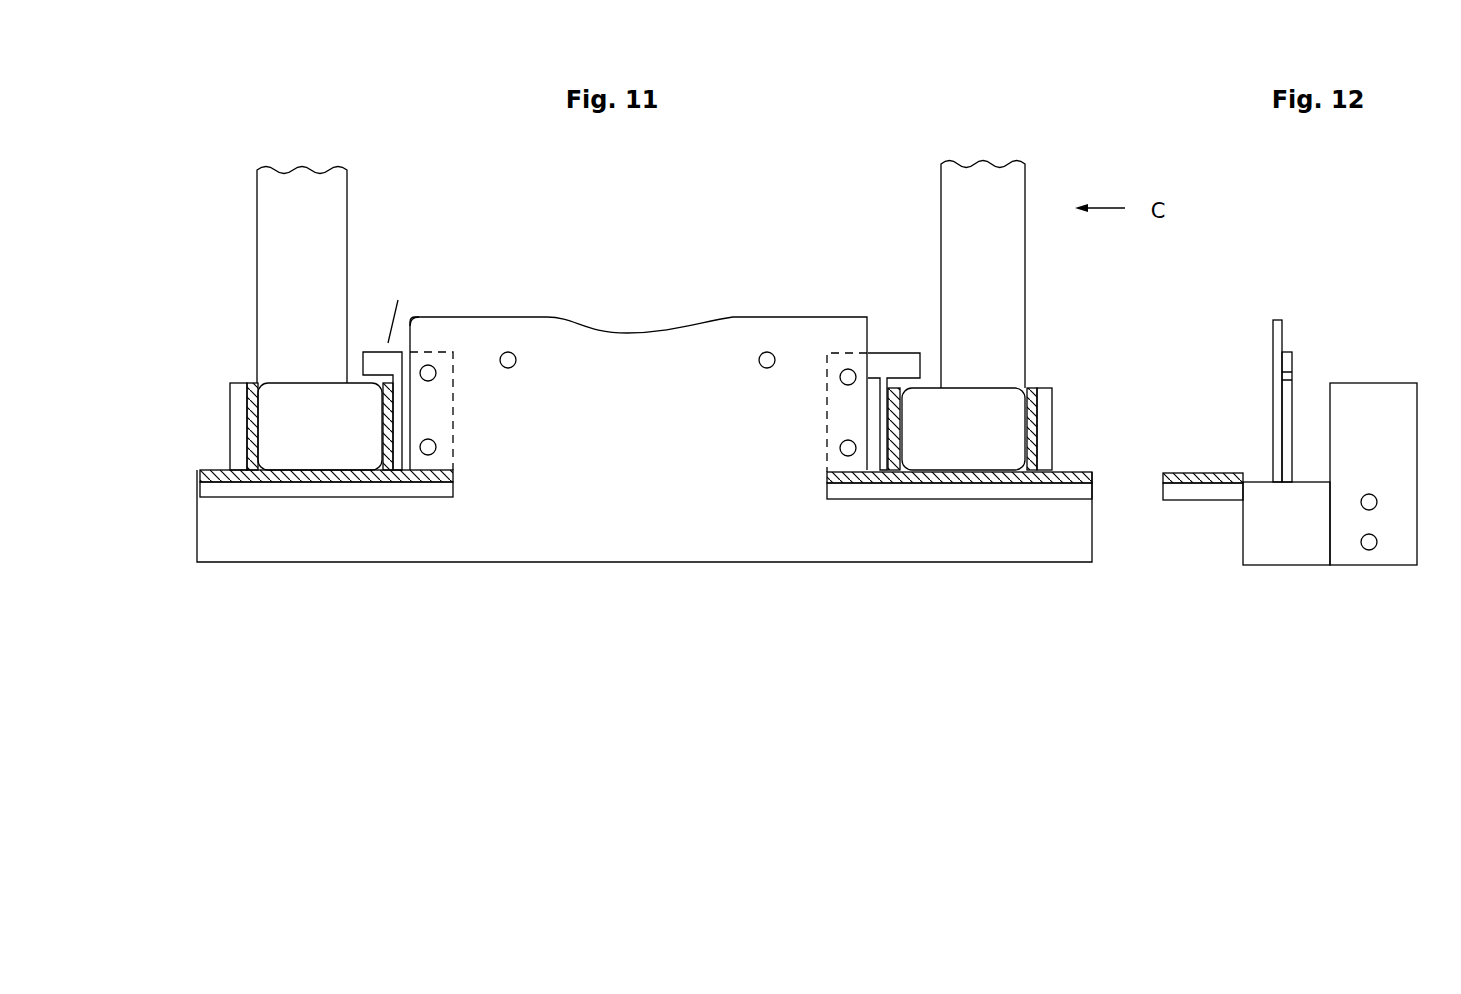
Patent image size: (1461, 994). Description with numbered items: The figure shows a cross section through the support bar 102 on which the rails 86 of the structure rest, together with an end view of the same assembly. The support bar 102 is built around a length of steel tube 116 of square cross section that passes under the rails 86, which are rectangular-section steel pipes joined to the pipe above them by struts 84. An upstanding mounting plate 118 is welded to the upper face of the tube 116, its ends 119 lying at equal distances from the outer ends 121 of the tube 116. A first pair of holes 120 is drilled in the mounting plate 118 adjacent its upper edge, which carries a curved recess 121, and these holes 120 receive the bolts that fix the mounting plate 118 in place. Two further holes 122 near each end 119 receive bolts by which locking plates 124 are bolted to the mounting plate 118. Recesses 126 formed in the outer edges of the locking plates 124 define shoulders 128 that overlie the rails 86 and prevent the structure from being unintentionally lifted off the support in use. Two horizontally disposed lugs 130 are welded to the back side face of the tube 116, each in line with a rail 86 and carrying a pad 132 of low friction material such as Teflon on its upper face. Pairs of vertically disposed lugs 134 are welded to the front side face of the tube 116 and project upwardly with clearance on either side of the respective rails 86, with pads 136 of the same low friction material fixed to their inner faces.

In FIG. 11, the struts 84 is at (276, 232).
In FIG. 11, the rails 86 is at (290, 425).
In FIG. 11, the support bar 102 is at (678, 564).
In FIG. 11, the steel tube 116 is at (784, 553).
In FIG. 12, the steel tube 116 is at (1301, 548).
In FIG. 11, the mounting plate 118 is at (578, 340).
In FIG. 12, the mounting plate 118 is at (1275, 384).
In FIG. 11, the ends of the mounting plate 119 is at (410, 322).
In FIG. 11, the first pair of holes 120 is at (512, 366).
In FIG. 11, the outer ends of the tube 121 is at (197, 522).
In FIG. 11, the further holes 122 is at (436, 379).
In FIG. 11, the locking plates 124 is at (892, 351).
In FIG. 12, the locking plates 124 is at (1284, 362).
In FIG. 11, the recesses 126 is at (388, 343).
In FIG. 11, the shoulders 128 is at (370, 356).
In FIG. 12, the shoulders 128 is at (1290, 372).
In FIG. 11, the horizontally disposed lugs 130 is at (942, 492).
In FIG. 12, the horizontally disposed lugs 130 is at (1180, 495).
In FIG. 11, the pad of low friction material 132 is at (1010, 478).
In FIG. 12, the pad of low friction material 132 is at (1208, 474).
In FIG. 11, the vertically disposed lugs 134 is at (1040, 426).
In FIG. 12, the vertically disposed lugs 134 is at (1400, 556).
In FIG. 11, the pads of low friction material 136 is at (1030, 400).